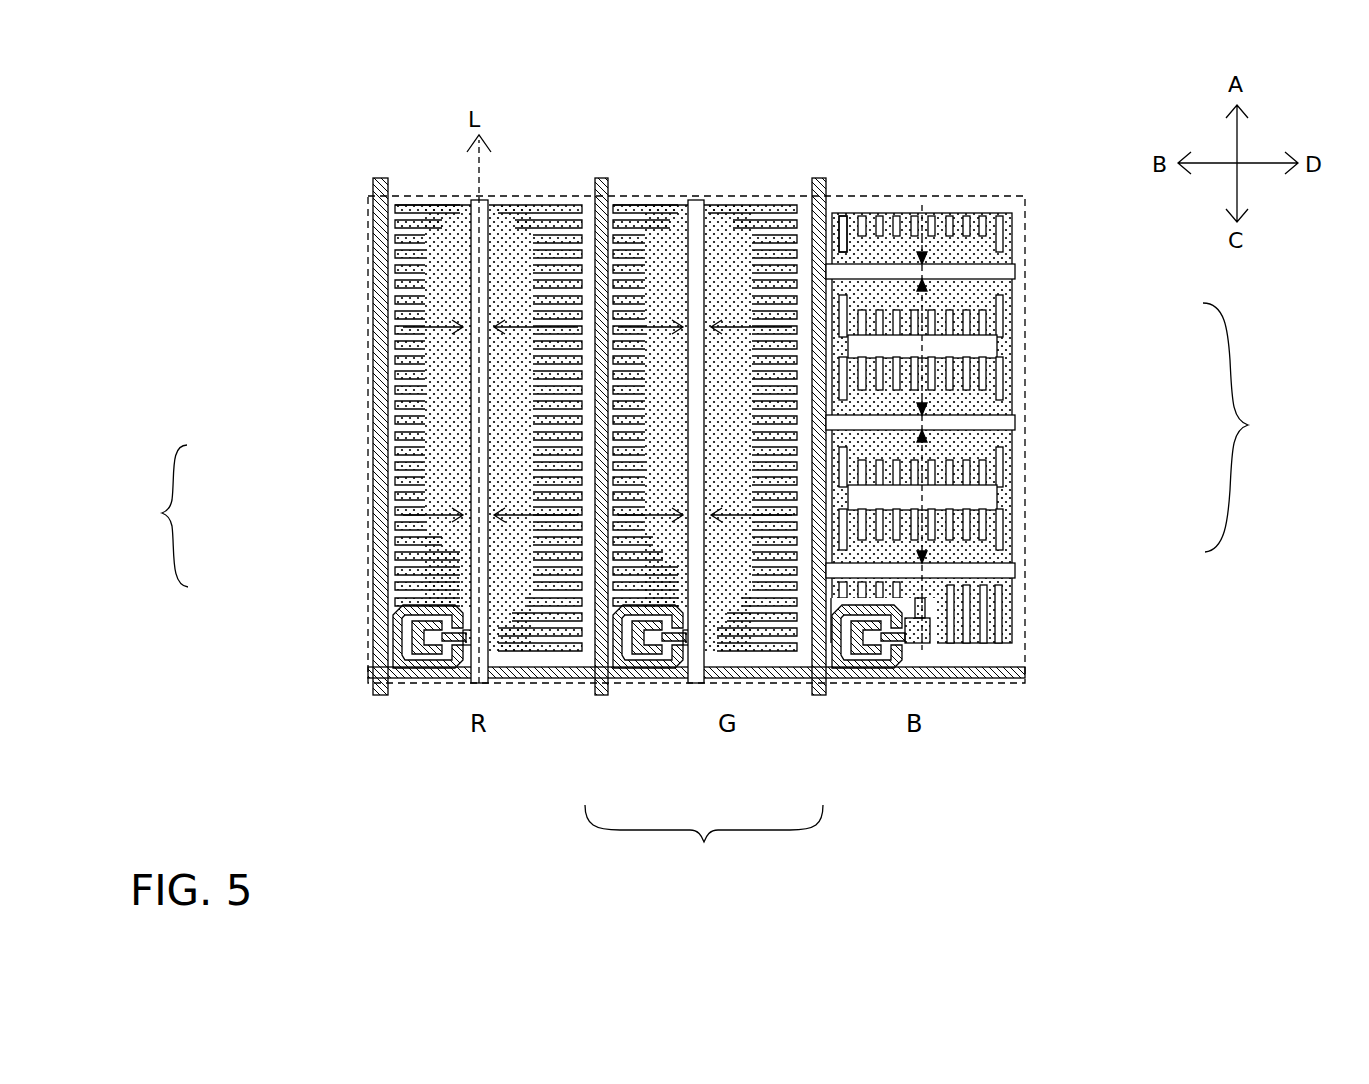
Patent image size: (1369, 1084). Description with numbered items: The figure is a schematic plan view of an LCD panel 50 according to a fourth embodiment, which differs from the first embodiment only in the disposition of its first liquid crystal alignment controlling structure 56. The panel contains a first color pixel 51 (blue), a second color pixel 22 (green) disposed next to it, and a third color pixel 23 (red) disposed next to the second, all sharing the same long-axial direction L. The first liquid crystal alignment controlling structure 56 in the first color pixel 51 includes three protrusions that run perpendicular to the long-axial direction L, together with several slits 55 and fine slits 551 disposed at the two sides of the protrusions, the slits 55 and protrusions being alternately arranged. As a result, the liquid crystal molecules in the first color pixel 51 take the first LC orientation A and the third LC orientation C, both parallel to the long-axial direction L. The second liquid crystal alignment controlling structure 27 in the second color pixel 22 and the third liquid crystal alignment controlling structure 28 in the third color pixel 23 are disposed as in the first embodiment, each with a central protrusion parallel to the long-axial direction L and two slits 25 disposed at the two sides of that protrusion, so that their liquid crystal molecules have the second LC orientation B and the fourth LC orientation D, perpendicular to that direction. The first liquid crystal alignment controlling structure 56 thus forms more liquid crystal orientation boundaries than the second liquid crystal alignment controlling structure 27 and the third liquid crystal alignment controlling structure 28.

The LCD panel 50 is at (92, 152).
The second color pixel 22 is at (680, 196).
The third color pixel 23 is at (397, 196).
The slit 25 is at (583, 448).
The second liquid crystal alignment controlling structure 27 is at (704, 839).
The third liquid crystal alignment controlling structure 28 is at (157, 516).
The first color pixel 51 is at (895, 196).
The fine slit 551 is at (848, 220).
The slit 55 is at (996, 204).
The first liquid crystal alignment controlling structure 56 is at (1244, 427).